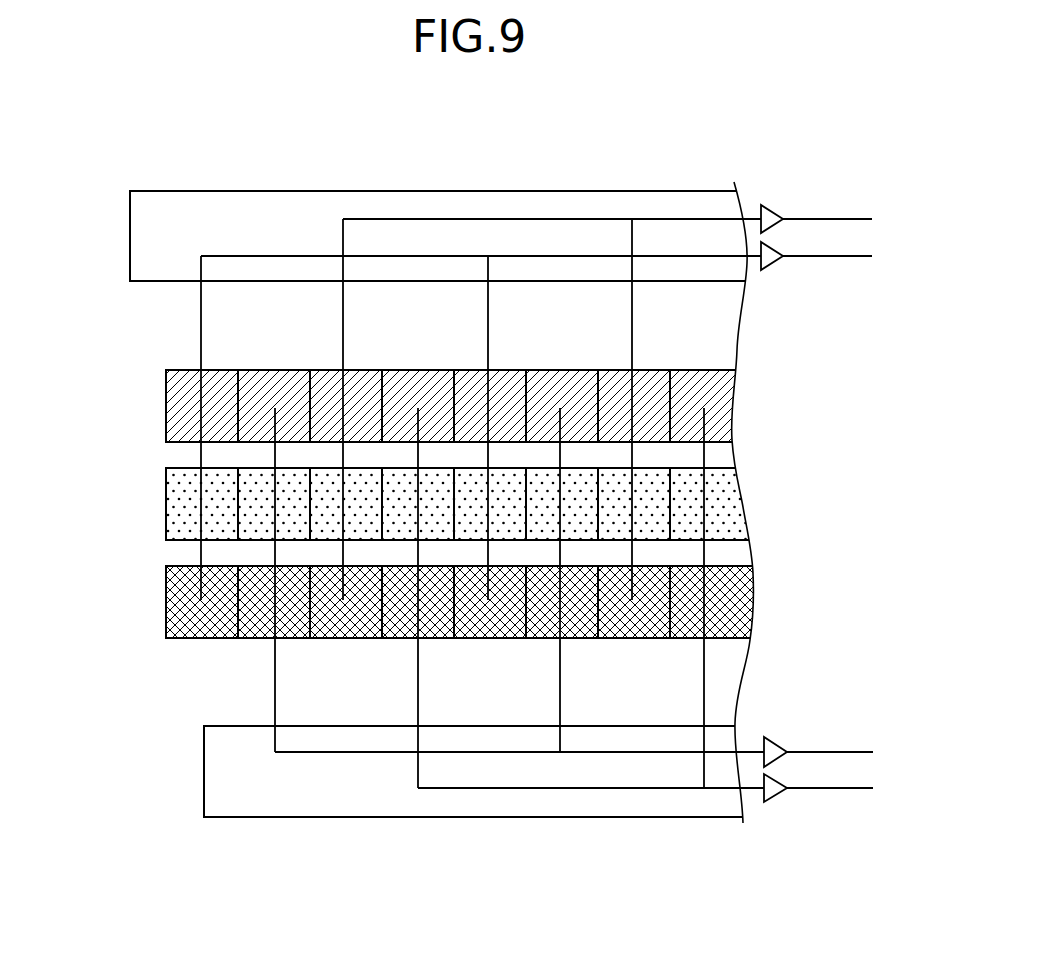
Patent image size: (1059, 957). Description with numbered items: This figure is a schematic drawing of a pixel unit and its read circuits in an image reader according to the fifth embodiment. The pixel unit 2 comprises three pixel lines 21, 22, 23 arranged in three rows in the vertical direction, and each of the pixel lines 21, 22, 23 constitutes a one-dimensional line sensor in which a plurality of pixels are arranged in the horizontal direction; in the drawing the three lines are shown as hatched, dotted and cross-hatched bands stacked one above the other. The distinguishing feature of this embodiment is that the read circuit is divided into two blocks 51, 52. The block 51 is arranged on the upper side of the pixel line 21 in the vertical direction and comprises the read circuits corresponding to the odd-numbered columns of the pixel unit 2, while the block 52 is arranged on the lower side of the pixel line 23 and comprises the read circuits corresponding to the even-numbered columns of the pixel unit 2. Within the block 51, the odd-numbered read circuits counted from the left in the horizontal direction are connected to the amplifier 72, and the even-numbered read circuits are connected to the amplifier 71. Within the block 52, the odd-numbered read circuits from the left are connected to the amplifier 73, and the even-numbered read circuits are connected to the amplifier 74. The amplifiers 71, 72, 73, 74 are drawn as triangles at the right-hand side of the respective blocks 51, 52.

The pixel unit 2 is at (407, 504).
The pixel line 21 is at (166, 408).
The pixel line 22 is at (166, 503).
The pixel line 23 is at (427, 602).
The block 51 is at (446, 191).
The block 52 is at (488, 817).
The amplifier 71 is at (775, 205).
The amplifier 72 is at (765, 270).
The amplifier 73 is at (778, 738).
The amplifier 74 is at (768, 803).